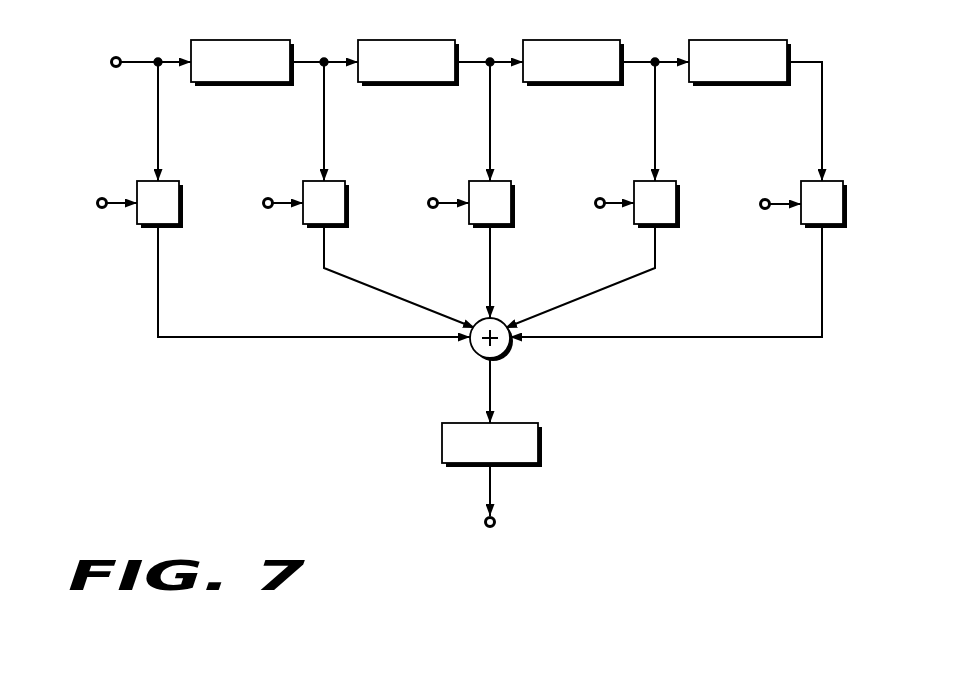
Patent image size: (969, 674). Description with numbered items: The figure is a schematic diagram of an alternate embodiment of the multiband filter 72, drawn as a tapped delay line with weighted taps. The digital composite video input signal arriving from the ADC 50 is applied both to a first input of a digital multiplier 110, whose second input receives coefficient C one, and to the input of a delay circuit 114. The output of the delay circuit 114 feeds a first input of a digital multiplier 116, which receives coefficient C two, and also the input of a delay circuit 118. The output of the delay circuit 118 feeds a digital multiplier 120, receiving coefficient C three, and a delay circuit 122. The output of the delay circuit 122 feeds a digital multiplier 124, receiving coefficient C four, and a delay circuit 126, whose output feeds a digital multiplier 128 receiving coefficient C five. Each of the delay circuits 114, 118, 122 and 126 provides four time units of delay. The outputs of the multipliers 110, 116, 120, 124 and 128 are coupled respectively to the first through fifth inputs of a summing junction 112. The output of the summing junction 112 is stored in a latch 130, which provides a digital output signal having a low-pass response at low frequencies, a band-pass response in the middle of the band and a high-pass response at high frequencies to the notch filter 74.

The ADC 50 is at (97, 62).
The multiband filter 72 is at (136, 428).
The notch filter 74 is at (491, 555).
The digital multiplier 110 is at (143, 180).
The summing junction 112 is at (471, 352).
The delay circuit 114 is at (248, 40).
The digital multiplier 116 is at (309, 180).
The delay circuit 118 is at (415, 40).
The digital multiplier 120 is at (475, 180).
The delay circuit 122 is at (582, 40).
The digital multiplier 124 is at (640, 180).
The delay circuit 126 is at (747, 40).
The digital multiplier 128 is at (806, 180).
The latch 130 is at (541, 447).